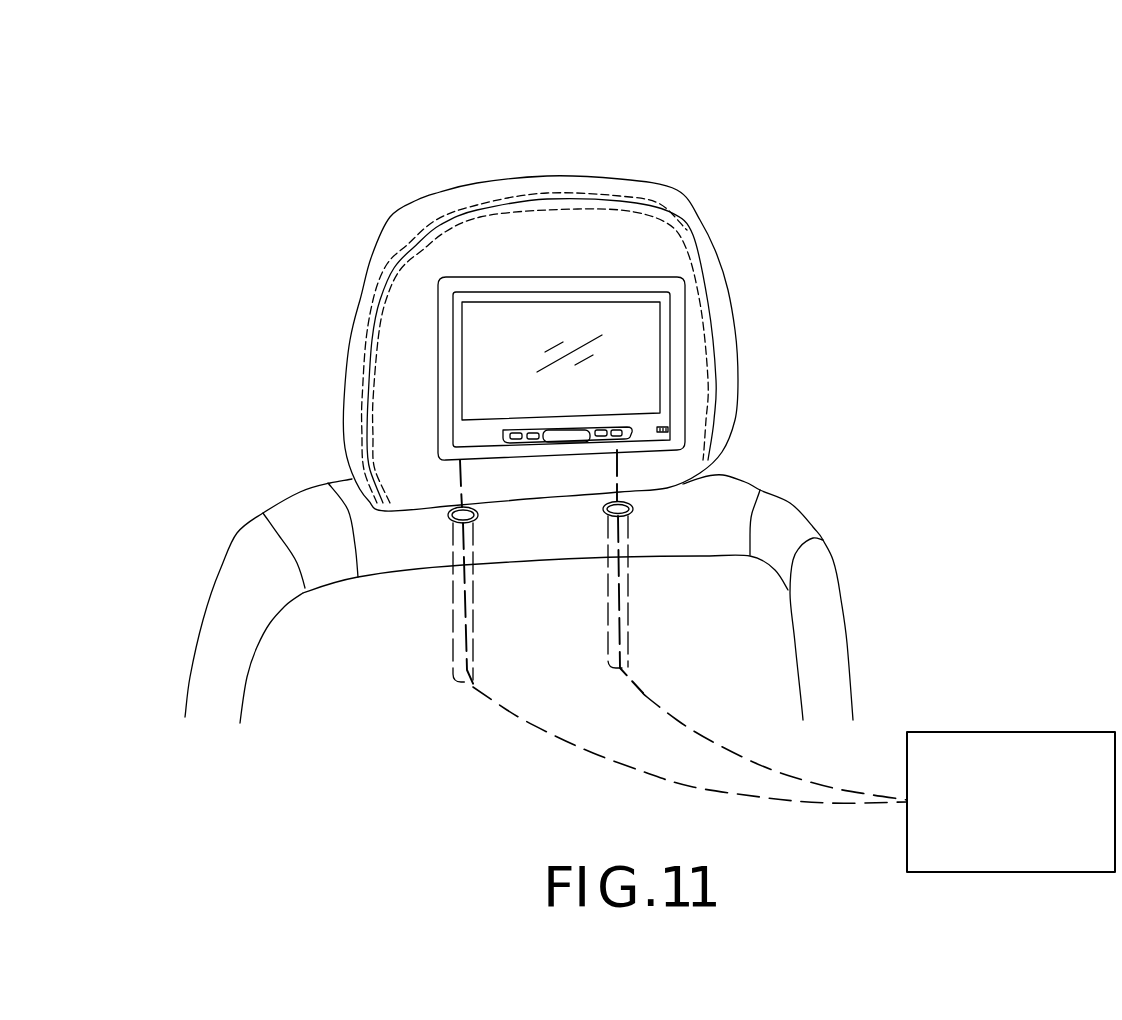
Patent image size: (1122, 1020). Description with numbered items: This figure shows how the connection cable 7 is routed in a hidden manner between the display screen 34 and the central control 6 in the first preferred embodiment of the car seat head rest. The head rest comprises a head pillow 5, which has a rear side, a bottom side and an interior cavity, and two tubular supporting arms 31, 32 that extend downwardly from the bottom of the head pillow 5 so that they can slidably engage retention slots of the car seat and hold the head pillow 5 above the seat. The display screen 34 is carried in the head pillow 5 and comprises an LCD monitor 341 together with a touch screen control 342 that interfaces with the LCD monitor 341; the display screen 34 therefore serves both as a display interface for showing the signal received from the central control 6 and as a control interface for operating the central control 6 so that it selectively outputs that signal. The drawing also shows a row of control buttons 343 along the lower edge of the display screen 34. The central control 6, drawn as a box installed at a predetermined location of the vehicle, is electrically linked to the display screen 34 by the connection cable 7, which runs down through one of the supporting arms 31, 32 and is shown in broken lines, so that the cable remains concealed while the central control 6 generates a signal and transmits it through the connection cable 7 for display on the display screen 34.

The head pillow 5 is at (405, 238).
The display screen 34 is at (696, 316).
The LCD monitor 341 is at (676, 348).
The touch screen control 342 is at (568, 300).
The control buttons 343 is at (624, 449).
The tubular supporting arm 31 is at (436, 592).
The tubular supporting arm 32 is at (651, 590).
The connection cable 7 is at (446, 640).
The central control 6 is at (971, 762).